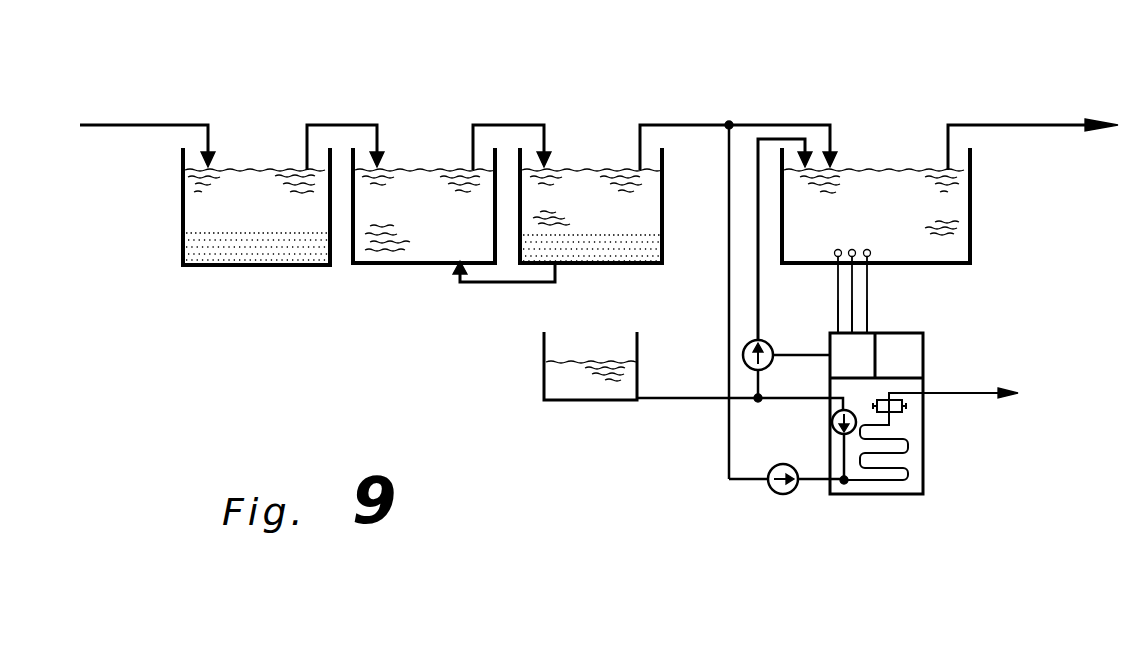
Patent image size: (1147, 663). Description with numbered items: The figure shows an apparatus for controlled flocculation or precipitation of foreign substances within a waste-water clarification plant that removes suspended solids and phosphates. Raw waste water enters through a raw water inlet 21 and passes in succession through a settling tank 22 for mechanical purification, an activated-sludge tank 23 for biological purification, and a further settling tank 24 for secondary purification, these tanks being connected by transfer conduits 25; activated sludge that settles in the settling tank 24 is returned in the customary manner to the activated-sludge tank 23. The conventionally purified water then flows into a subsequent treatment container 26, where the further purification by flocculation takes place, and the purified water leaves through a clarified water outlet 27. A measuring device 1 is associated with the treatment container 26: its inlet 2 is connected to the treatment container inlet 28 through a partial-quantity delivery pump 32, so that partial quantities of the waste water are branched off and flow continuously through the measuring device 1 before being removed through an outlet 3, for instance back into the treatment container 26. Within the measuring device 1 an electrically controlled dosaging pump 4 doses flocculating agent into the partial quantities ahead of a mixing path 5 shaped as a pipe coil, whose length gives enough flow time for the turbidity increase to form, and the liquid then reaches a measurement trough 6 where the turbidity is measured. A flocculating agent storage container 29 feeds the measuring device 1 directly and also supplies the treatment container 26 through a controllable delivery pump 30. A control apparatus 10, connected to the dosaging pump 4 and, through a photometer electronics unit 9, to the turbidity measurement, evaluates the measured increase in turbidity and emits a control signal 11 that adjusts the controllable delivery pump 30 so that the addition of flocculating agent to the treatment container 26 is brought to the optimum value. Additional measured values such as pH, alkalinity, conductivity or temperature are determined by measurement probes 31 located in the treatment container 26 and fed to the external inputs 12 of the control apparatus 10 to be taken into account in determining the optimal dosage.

The measuring device 1 is at (902, 448).
The inlet 2 is at (816, 483).
The outlet 3 is at (973, 394).
The dosaging pump 4 is at (832, 431).
The mixing path 5 is at (915, 454).
The measurement trough 6 is at (905, 413).
The photometer electronics unit 9 is at (906, 369).
The control apparatus 10 is at (864, 369).
The control signal 11 is at (797, 354).
The external inputs 12 is at (860, 327).
The raw water inlet 21 is at (132, 125).
The settling tank 22 is at (270, 219).
The activated-sludge tank 23 is at (446, 222).
The settling tank 24 is at (613, 219).
The transfer conduits 25 is at (683, 125).
The treatment container 26 is at (896, 220).
The clarified water outlet 27 is at (1069, 125).
The treatment container inlet 28 is at (833, 148).
The flocculating agent storage container 29 is at (590, 385).
The controllable delivery pump 30 is at (745, 347).
The measurement probes 31 is at (872, 259).
The partial-quantity delivery pump 32 is at (771, 490).